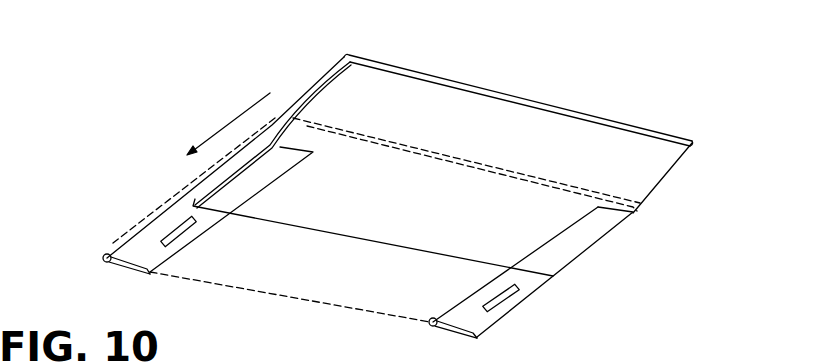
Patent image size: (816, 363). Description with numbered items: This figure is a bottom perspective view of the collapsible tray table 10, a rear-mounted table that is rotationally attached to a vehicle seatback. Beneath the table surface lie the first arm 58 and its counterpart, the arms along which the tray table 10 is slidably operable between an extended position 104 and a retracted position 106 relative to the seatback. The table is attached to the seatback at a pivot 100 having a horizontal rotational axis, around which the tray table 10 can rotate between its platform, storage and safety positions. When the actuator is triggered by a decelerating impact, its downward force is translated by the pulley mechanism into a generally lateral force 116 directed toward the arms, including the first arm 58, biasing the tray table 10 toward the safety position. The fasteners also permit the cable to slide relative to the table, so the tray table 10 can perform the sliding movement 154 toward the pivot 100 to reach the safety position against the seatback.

The collapsible tray table 10 is at (582, 101).
The extended position 104 is at (694, 143).
The first arm 58 is at (593, 228).
The pivot 100 is at (103, 258).
The retracted position 106 is at (356, 305).
The generally lateral force 116 is at (230, 122).
The sliding movement 154 is at (184, 183).